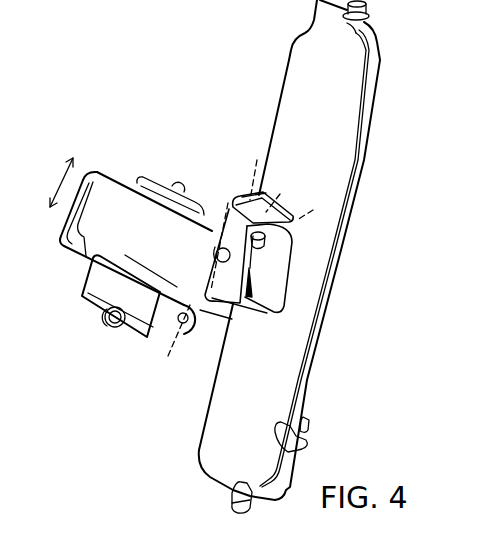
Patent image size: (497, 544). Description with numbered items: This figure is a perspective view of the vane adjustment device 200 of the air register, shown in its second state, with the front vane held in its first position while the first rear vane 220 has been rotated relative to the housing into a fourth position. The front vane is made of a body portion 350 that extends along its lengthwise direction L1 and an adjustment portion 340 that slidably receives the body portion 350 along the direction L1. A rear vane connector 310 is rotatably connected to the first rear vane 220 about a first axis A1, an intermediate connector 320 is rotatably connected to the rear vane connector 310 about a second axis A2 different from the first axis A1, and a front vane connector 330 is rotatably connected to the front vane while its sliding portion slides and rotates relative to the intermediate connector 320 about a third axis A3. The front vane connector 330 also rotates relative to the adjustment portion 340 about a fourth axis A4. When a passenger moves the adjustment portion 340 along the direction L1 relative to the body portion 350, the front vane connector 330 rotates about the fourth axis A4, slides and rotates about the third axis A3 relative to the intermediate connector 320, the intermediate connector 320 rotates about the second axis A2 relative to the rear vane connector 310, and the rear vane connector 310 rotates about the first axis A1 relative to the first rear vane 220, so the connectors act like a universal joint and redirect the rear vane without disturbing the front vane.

The vane adjustment device 200 is at (220, 222).
The first rear vane 220 is at (375, 103).
The rear vane connector 310 is at (206, 306).
The intermediate connector 320 is at (262, 265).
The front vane connector 330 is at (266, 242).
The adjustment portion 340 is at (113, 185).
The body portion 350 is at (95, 286).
The first axis A1 is at (258, 170).
The second axis A2 is at (285, 193).
The third axis A3 is at (317, 207).
The fourth axis A4 is at (169, 342).
The lengthwise direction L1 is at (54, 182).